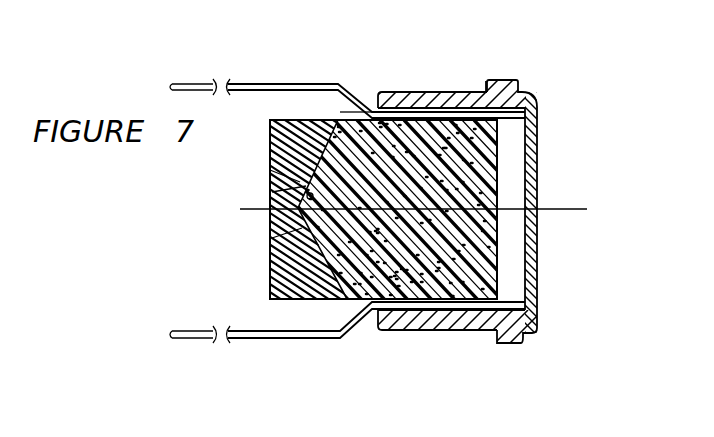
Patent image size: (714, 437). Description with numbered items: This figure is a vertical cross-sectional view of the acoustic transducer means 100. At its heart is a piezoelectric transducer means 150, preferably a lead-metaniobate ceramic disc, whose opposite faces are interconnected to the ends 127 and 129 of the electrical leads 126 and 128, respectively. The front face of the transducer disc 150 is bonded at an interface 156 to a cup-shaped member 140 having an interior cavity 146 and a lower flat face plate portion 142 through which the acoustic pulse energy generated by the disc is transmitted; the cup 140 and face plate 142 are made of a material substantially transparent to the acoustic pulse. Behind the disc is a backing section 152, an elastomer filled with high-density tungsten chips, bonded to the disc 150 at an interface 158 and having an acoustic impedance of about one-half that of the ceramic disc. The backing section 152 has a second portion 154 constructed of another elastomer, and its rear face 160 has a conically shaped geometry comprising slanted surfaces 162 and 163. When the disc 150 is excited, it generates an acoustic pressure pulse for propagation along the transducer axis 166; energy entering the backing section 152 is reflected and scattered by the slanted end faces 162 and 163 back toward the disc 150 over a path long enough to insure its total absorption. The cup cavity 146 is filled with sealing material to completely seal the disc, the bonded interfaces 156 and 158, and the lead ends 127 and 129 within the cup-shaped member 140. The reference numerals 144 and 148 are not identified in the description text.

The acoustic transducer means 100 is at (357, 202).
The electrical lead 126 is at (268, 84).
The end of electrical lead 127 is at (515, 79).
The electrical lead 128 is at (237, 340).
The end of electrical lead 129 is at (458, 331).
The cup-shaped member 140 is at (442, 91).
The face plate portion 142 is at (540, 138).
The step portion 144 is at (487, 79).
The interior cavity 146 is at (348, 110).
The sleeve end 148 is at (258, 217).
The piezoelectric transducer means 150 is at (540, 233).
The backing section 152 is at (340, 306).
The second portion of backing section 154 is at (270, 281).
The interface 156 is at (540, 165).
The interface 158 is at (540, 276).
The rear face of backing section 160 is at (270, 170).
The slanted end face 162 is at (272, 192).
The slanted end face 163 is at (272, 238).
The transducer axis 166 is at (588, 208).